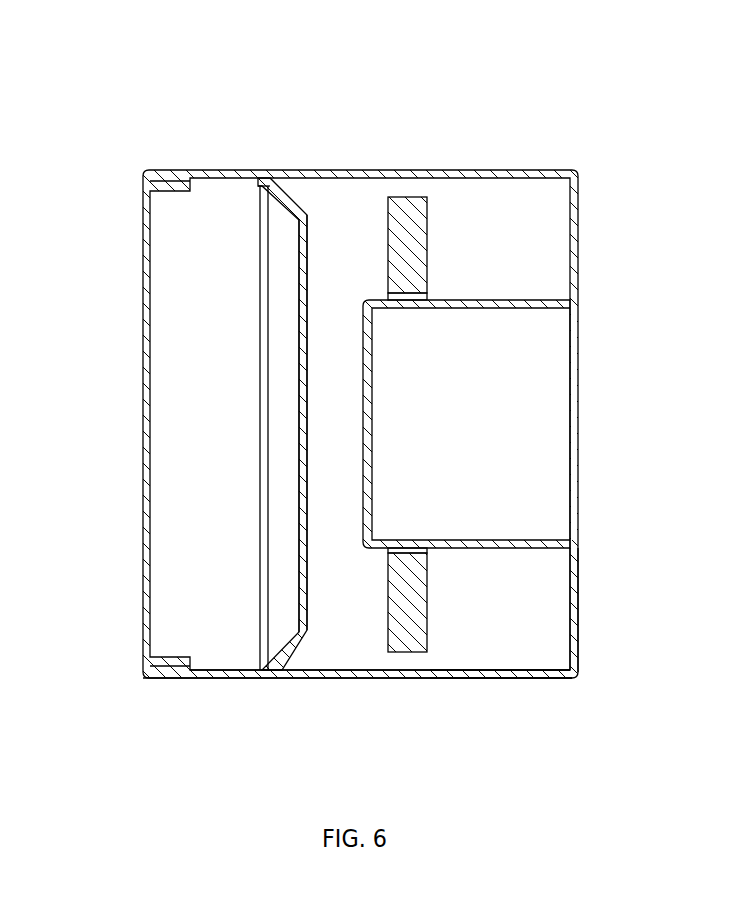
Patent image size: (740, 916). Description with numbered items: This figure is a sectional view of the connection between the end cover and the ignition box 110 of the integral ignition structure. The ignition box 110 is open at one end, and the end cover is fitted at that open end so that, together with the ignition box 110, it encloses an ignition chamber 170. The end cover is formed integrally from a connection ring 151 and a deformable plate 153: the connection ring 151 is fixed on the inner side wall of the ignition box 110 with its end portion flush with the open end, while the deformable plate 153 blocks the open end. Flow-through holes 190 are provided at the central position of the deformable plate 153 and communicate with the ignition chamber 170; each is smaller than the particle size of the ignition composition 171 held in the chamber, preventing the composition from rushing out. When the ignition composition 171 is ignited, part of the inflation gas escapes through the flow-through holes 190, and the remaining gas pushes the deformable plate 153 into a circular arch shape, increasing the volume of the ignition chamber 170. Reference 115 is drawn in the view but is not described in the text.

The ignition box 110 is at (360, 409).
The receiving box 115 is at (488, 390).
The connection ring 151 is at (232, 672).
The deformable plate 153 is at (205, 490).
The ignition chamber 170 is at (480, 626).
The ignition composition 171 is at (405, 247).
The flow-through hole 190 is at (305, 372).